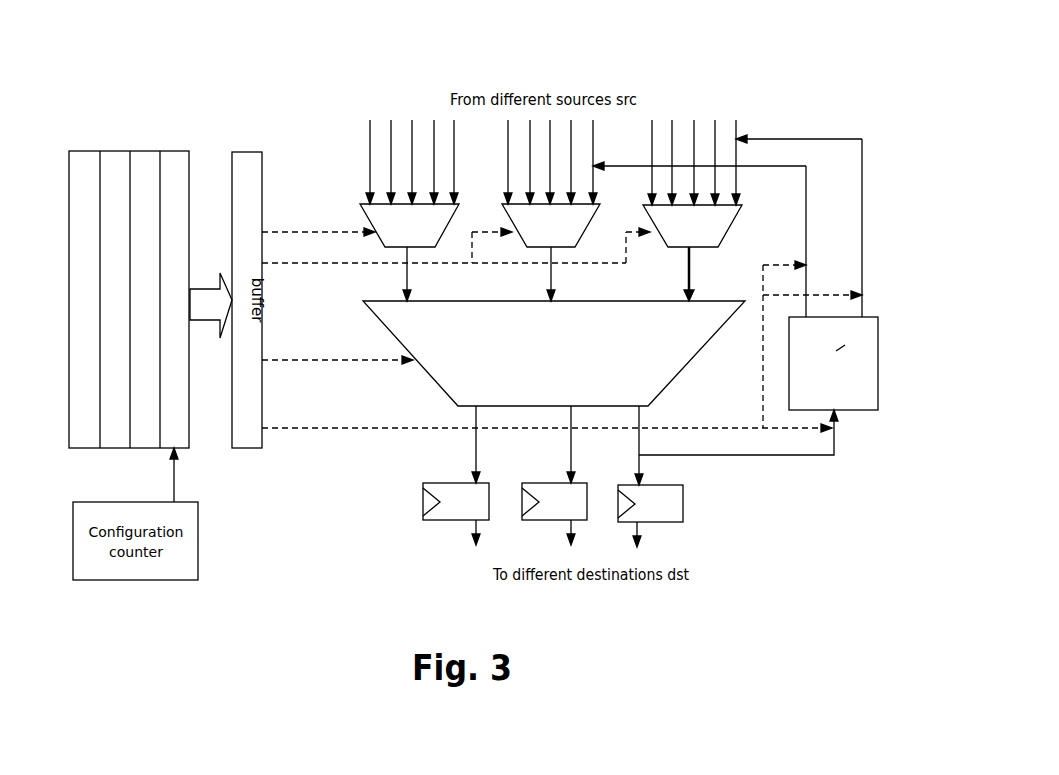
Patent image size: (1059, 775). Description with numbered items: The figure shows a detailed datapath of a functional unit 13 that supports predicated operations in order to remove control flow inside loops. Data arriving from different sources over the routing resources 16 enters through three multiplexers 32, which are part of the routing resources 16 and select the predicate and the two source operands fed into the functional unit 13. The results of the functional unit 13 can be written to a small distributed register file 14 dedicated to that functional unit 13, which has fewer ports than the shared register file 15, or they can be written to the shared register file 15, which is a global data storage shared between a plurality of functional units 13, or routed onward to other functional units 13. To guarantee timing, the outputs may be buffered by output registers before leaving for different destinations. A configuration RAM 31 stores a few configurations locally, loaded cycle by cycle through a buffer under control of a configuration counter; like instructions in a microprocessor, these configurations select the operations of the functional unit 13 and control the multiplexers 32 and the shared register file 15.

The functional unit 13 is at (440, 360).
The distributed register file 14 is at (455, 500).
The shared register file 15 is at (843, 375).
The routing resources 16 is at (348, 123).
The configuration RAM 31 is at (117, 400).
The multiplexer 32 is at (417, 250).